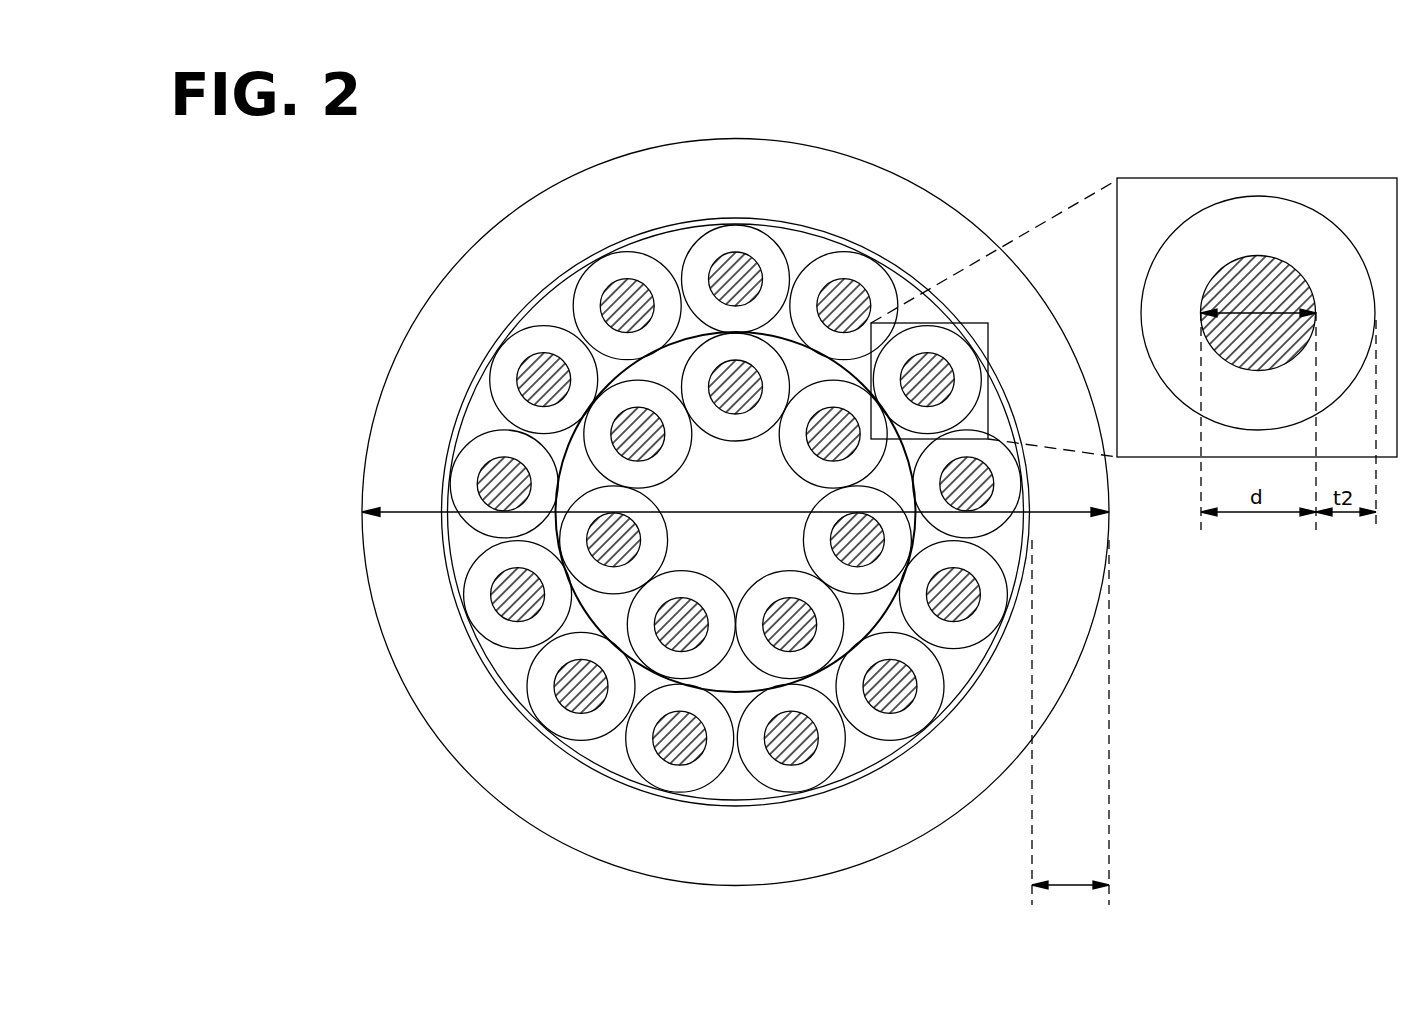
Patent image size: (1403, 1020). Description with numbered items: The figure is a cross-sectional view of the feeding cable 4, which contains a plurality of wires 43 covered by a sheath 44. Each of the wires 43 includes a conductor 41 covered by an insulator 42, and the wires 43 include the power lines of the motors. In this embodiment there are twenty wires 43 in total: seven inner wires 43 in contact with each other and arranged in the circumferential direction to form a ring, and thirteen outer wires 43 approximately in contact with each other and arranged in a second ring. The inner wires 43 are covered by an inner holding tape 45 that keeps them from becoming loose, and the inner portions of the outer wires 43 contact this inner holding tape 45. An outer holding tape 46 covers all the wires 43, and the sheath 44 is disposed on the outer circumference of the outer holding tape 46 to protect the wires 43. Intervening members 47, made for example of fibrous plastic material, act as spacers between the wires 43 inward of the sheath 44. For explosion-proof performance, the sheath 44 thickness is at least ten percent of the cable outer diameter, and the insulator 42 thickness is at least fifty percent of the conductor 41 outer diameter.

The feeding cable 4 is at (333, 237).
The conductor 41 is at (873, 278).
The insulator 42 is at (852, 262).
The wires 43 is at (884, 450).
The sheath 44 is at (415, 385).
The inner holding tape 45 is at (653, 278).
The outer holding tape 46 is at (693, 222).
The intervening members 47 is at (607, 745).